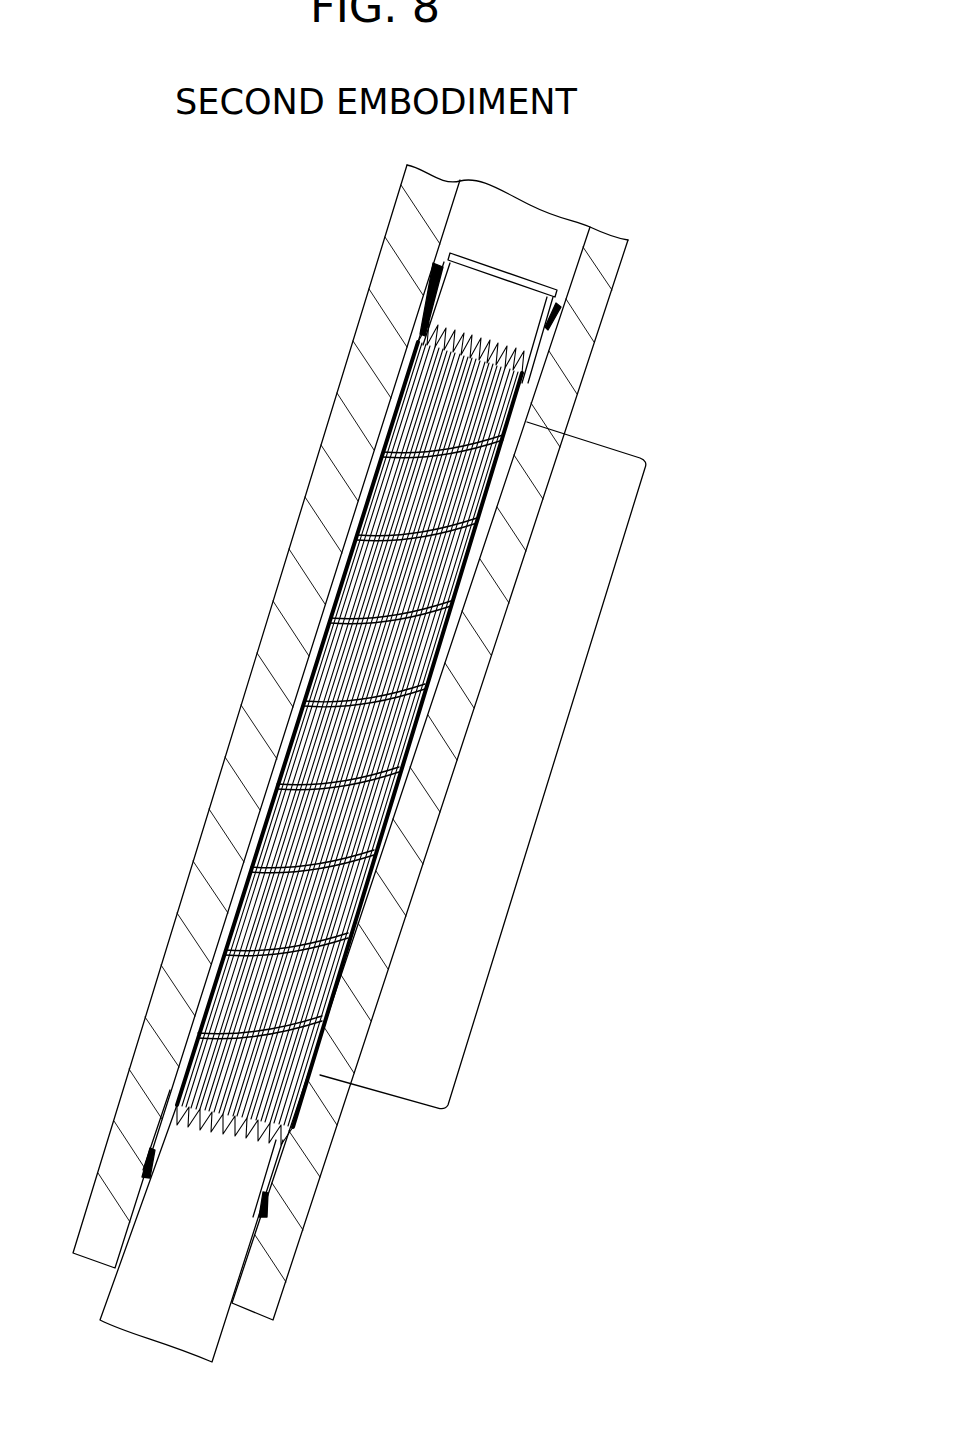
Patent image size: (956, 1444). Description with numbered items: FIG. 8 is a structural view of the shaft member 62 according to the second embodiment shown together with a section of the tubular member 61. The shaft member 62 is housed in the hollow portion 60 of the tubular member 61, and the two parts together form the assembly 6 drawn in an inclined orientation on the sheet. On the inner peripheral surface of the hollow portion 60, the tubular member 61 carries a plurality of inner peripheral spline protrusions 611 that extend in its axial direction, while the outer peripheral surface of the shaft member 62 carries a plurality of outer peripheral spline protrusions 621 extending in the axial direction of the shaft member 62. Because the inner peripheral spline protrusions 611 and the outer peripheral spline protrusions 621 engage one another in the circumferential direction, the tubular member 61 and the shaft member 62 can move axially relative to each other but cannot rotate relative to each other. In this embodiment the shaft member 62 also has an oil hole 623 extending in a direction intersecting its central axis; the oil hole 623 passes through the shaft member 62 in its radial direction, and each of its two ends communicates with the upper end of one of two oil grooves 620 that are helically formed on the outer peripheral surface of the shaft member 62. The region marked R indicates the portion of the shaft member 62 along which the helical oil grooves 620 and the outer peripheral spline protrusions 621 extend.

The tube 60 is at (548, 219).
The tube wall 61 is at (287, 592).
The heat exchanger assembly 6 is at (388, 785).
The frame 62 is at (532, 333).
The clip 611 is at (427, 290).
The bent portion 620 is at (405, 445).
The straight fiber portion 621 is at (252, 815).
The bundle edge 623 is at (533, 408).
The region R is at (558, 748).